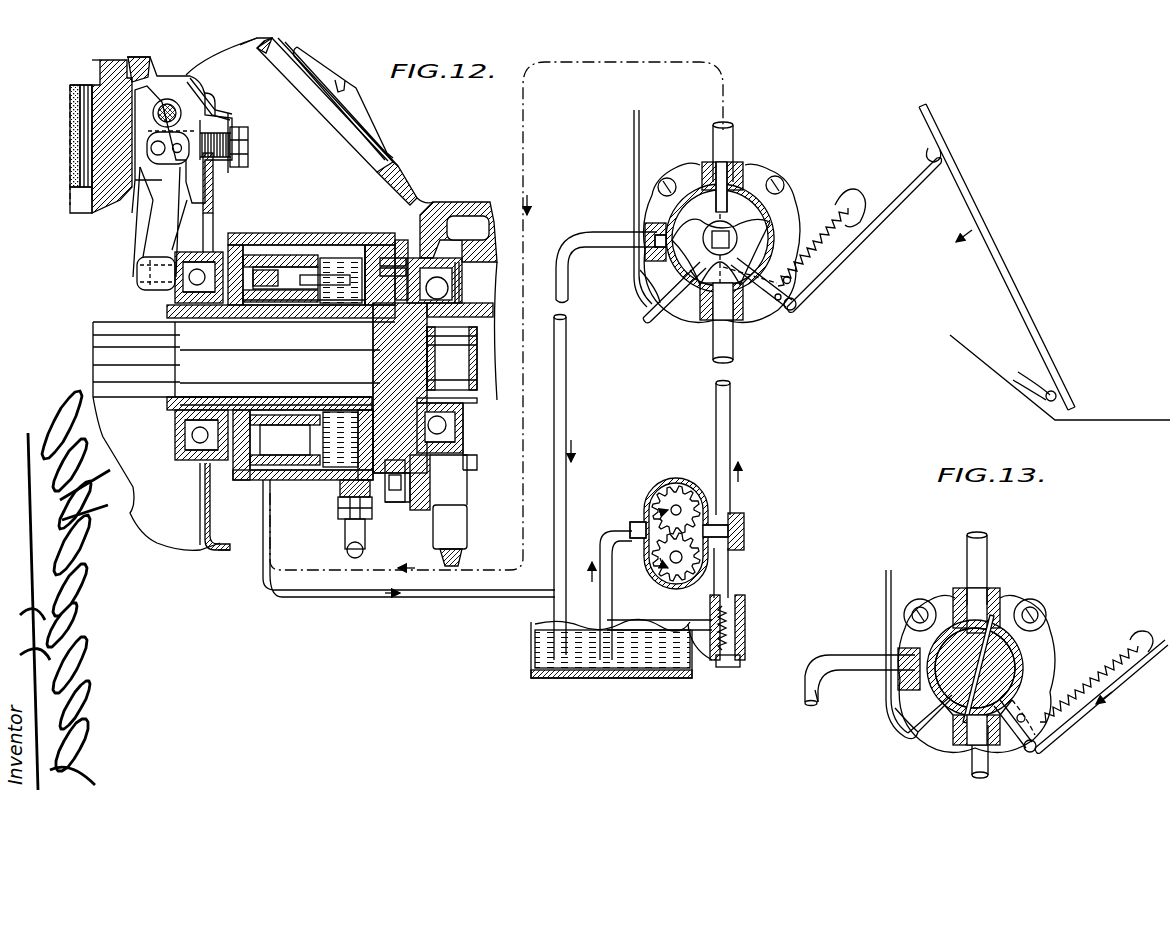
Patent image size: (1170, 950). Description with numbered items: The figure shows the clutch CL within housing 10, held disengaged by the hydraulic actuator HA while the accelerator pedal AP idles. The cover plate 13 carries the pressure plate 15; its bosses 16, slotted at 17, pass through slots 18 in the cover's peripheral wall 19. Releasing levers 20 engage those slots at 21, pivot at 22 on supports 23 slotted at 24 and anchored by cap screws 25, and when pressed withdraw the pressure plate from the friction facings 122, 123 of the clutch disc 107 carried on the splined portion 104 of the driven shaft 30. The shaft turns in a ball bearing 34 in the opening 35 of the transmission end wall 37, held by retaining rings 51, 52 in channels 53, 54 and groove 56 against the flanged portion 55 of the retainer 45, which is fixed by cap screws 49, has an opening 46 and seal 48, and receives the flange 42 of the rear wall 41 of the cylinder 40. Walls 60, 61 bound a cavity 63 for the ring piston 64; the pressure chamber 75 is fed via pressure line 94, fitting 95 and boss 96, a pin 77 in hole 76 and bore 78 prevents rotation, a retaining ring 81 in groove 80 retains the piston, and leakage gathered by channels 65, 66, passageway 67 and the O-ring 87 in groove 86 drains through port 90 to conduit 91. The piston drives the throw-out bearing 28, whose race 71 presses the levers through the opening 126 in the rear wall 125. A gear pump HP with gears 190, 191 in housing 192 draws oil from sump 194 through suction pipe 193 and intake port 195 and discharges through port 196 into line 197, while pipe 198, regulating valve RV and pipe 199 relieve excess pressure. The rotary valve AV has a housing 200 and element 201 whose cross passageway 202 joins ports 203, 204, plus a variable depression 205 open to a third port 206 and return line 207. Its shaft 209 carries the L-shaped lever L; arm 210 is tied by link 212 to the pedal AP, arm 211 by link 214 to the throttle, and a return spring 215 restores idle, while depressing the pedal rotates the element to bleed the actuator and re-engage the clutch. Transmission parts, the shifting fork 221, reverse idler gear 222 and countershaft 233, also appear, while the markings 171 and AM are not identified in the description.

In FIG. 12, the housing 10 is at (398, 176).
In FIG. 12, the cover plate 13 is at (216, 192).
In FIG. 12, the clutch pressure plate 15 is at (102, 180).
In FIG. 12, the bosses 16 is at (160, 98).
In FIG. 12, the radial slots 17 is at (170, 108).
In FIG. 12, the cover slots 18 is at (132, 70).
In FIG. 12, the peripheral marginal wall portion 19 is at (205, 114).
In FIG. 12, the clutch releasing levers 20 is at (165, 236).
In FIG. 12, the pivotal engagement 21 is at (178, 134).
In FIG. 12, the pivot connection 22 is at (150, 200).
In FIG. 12, the supports 23 is at (212, 136).
In FIG. 12, the support slots 24 is at (215, 126).
In FIG. 12, the cap screws 25 is at (248, 148).
In FIG. 12, the clutch throw-out bearing 28 is at (178, 432).
In FIG. 12, the clutch driven shaft 30 is at (300, 368).
In FIG. 12, the ball bearing 34 is at (462, 432).
In FIG. 12, the circular opening 35 is at (430, 446).
In FIG. 12, the forward end wall 37 is at (462, 556).
In FIG. 12, the cylindrical housing 40 is at (288, 236).
In FIG. 12, the rear wall 41 is at (368, 246).
In FIG. 12, the annular flange 42 is at (382, 262).
In FIG. 12, the bearing and oil-seal retainer 45 is at (392, 273).
In FIG. 12, the central circular opening 46 is at (385, 330).
In FIG. 12, the shaft sealing assembly 48 is at (385, 385).
In FIG. 12, the cap screws 49 is at (394, 492).
In FIG. 12, the inner split retaining ring 51 is at (465, 400).
In FIG. 12, the outer split retaining ring 52 is at (458, 265).
In FIG. 12, the annular channel 53 is at (460, 410).
In FIG. 12, the annular channel 54 is at (462, 282).
In FIG. 12, the peripheral flanged portion 55 is at (446, 222).
In FIG. 12, the annular groove 56 is at (455, 450).
In FIG. 12, the inner circular wall 60 is at (268, 312).
In FIG. 12, the outer circular wall 61 is at (350, 238).
In FIG. 12, the annular cavity 63 is at (338, 444).
In FIG. 12, the ring-type piston 64 is at (295, 438).
In FIG. 12, the inner annular surface channel 65 is at (292, 308).
In FIG. 12, the outer annular surface channel 66 is at (270, 254).
In FIG. 12, the radial passageway 67 is at (250, 440).
In FIG. 12, the forward rotatable race 71 is at (190, 255).
In FIG. 12, the hydraulic pressure chamber 75 is at (335, 448).
In FIG. 12, the longitudinal hole 76 is at (295, 270).
In FIG. 12, the pin 77 is at (335, 272).
In FIG. 12, the bore 78 is at (400, 246).
In FIG. 12, the internal annular groove 80 is at (255, 252).
In FIG. 12, the split-type retaining ring 81 is at (240, 245).
In FIG. 12, the annular groove 86 is at (232, 412).
In FIG. 12, the O-ring pliant seal 87 is at (245, 412).
In FIG. 12, the port 90 is at (262, 478).
In FIG. 12, the drain conduit 91 is at (270, 594).
In FIG. 12, the pressure line 94 is at (352, 545).
In FIG. 12, the fitting 95 is at (350, 512).
In FIG. 12, the boss 96 is at (362, 490).
In FIG. 12, the splined portion 104 is at (150, 380).
In FIG. 12, the clutch disc 107 is at (82, 198).
In FIG. 12, the friction facing 122 is at (76, 125).
In FIG. 12, the friction facing 123 is at (84, 145).
In FIG. 12, the rear wall portion 125 is at (200, 508).
In FIG. 12, the central circular opening 126 is at (206, 490).
In FIG. 12, the backing plate 171 is at (100, 64).
In FIG. 12, the drive gear 190 is at (662, 498).
In FIG. 12, the driven gear 191 is at (664, 568).
In FIG. 12, the pump housing 192 is at (738, 546).
In FIG. 12, the suction pipe 193 is at (600, 660).
In FIG. 12, the oil sump 194 is at (650, 662).
In FIG. 12, the pump intake port 195 is at (642, 526).
In FIG. 12, the pressure discharge port 196 is at (722, 535).
In FIG. 12, the hydraulic line 197 is at (726, 127).
In FIG. 13, the hydraulic line 197 is at (982, 540).
In FIG. 12, the pipe 198 is at (724, 580).
In FIG. 12, the pipe 199 is at (692, 652).
In FIG. 12, the valve housing 200 is at (758, 204).
In FIG. 13, the valve housing 200 is at (1040, 652).
In FIG. 12, the rotatable element 201 is at (758, 218).
In FIG. 13, the rotatable element 201 is at (1002, 602).
In FIG. 12, the cross passageway 202 is at (702, 305).
In FIG. 13, the cross passageway 202 is at (940, 740).
In FIG. 12, the port 203 is at (742, 300).
In FIG. 13, the port 203 is at (958, 752).
In FIG. 12, the port 204 is at (710, 184).
In FIG. 13, the port 204 is at (958, 586).
In FIG. 12, the variable depth depression 205 is at (648, 226).
In FIG. 13, the variable depth depression 205 is at (940, 585).
In FIG. 12, the third port 206 is at (660, 252).
In FIG. 13, the third port 206 is at (900, 656).
In FIG. 12, the hydraulic return line 207 is at (570, 302).
In FIG. 13, the hydraulic return line 207 is at (798, 702).
In FIG. 12, the shaft 209 is at (740, 239).
In FIG. 12, the arm 210 is at (798, 304).
In FIG. 13, the arm 210 is at (1036, 748).
In FIG. 12, the arm 211 is at (668, 292).
In FIG. 13, the arm 211 is at (912, 742).
In FIG. 12, the link 212 is at (892, 208).
In FIG. 13, the link 212 is at (1140, 682).
In FIG. 12, the link 214 is at (630, 135).
In FIG. 13, the link 214 is at (886, 600).
In FIG. 12, the return spring 215 is at (842, 210).
In FIG. 13, the return spring 215 is at (1110, 672).
In FIG. 12, the shifting fork 221 is at (478, 358).
In FIG. 12, the reverse idler gear 222 is at (460, 335).
In FIG. 12, the countershaft 233 is at (452, 526).
In FIG. 12, the armature AM is at (96, 78).
In FIG. 12, the clutch CL is at (78, 222).
In FIG. 12, the hydraulic clutch actuator HA is at (345, 230).
In FIG. 12, the rotary hydraulic valve AV is at (756, 162).
In FIG. 13, the rotary hydraulic valve AV is at (1045, 628).
In FIG. 12, the accelerator pedal AP is at (966, 176).
In FIG. 12, the hydraulic pump HP is at (663, 480).
In FIG. 12, the pressure regulating valve RV is at (738, 640).
In FIG. 12, the L-shaped lever L is at (648, 322).
In FIG. 13, the L-shaped lever L is at (890, 722).